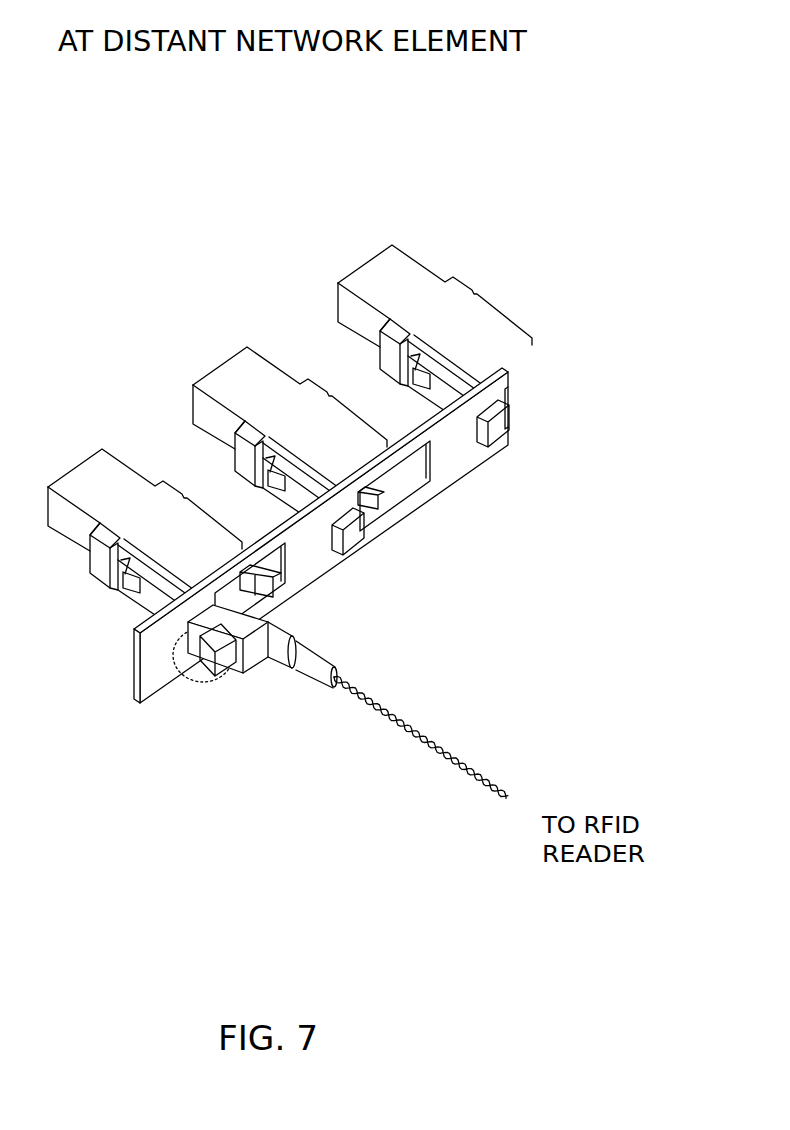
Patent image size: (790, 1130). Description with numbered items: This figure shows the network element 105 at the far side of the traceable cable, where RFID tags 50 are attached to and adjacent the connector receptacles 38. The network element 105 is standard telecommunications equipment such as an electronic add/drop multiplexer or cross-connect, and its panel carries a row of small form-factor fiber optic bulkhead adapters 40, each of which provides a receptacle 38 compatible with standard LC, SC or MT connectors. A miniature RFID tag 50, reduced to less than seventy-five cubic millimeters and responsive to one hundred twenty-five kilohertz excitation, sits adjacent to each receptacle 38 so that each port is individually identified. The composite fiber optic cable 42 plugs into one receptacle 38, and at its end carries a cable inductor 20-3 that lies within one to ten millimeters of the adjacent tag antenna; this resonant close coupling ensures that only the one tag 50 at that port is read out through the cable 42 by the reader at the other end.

The adapter 40 is at (103, 482).
The network element 105 is at (395, 535).
The connector receptacle 38 is at (397, 483).
The RFID tag 50 is at (348, 556).
The cable inductor 20-3 is at (220, 643).
The cable 42 is at (420, 776).